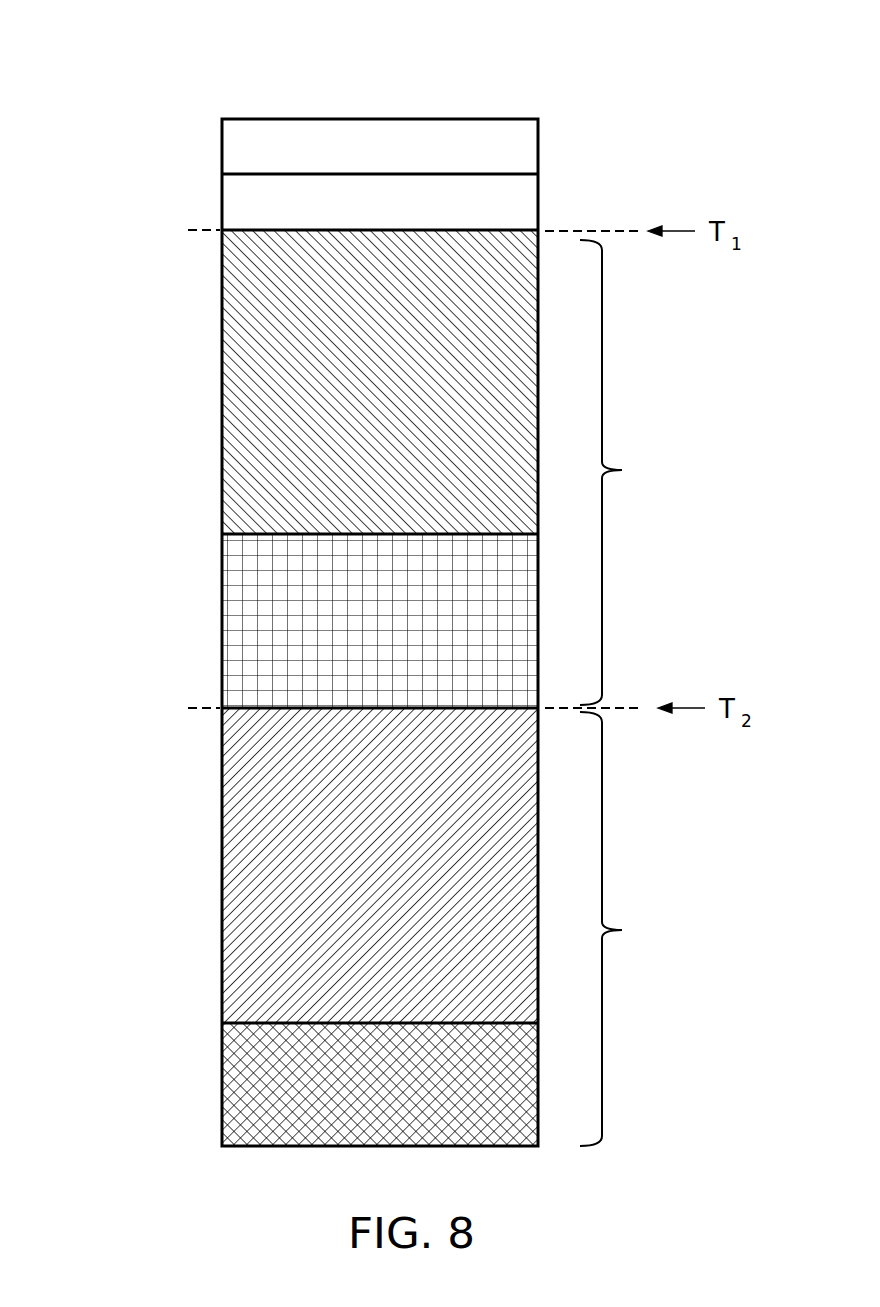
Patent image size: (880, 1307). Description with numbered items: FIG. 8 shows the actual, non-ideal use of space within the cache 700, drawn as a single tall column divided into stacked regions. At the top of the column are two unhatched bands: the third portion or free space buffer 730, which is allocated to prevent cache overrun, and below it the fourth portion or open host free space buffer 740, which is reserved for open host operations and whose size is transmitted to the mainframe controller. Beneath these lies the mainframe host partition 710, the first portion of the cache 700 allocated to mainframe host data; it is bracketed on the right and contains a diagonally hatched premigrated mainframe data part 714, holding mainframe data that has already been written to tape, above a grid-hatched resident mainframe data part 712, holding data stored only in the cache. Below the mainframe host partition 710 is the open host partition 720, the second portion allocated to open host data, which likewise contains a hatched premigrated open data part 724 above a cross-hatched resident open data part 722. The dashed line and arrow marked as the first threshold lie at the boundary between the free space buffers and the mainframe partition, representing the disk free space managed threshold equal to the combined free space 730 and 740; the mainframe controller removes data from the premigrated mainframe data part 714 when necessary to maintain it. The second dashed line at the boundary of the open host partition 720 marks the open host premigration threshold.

The cache 700 is at (213, 80).
The mainframe host partition 710 is at (641, 472).
The resident mainframe data part 712 is at (246, 628).
The premigrated mainframe data part 714 is at (241, 406).
The open host partition 720 is at (642, 929).
The resident open data part 722 is at (253, 1068).
The premigrated open data part 724 is at (258, 856).
The free space buffer 730 is at (520, 152).
The open host free space buffer 740 is at (240, 202).